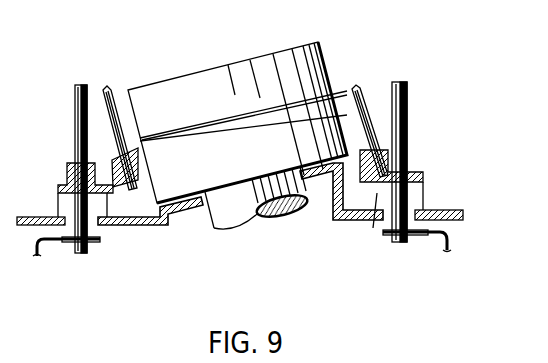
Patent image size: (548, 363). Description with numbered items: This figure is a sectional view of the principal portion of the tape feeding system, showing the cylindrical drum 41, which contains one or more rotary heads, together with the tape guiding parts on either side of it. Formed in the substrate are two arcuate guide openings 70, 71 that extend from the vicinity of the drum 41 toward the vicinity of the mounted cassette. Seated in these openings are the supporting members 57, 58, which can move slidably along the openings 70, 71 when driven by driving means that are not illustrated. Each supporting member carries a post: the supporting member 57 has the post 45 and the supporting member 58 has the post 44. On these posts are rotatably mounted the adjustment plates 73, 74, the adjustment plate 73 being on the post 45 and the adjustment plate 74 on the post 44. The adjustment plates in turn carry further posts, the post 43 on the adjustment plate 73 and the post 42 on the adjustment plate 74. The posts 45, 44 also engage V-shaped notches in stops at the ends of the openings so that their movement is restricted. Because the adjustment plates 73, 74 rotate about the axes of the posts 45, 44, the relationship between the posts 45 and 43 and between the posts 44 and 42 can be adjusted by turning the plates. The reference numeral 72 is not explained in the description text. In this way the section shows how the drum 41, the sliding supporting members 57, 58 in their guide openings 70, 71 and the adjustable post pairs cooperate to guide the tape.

The cylindrical drum 41 is at (255, 65).
The post 42 is at (105, 88).
The post 43 is at (355, 84).
The post 44 is at (77, 92).
The post 45 is at (402, 83).
The supporting member 57 is at (363, 213).
The supporting member 58 is at (97, 207).
The arcuate guide opening 70 is at (420, 237).
The arcuate guide opening 71 is at (65, 233).
The base plate 72 is at (463, 213).
The adjustment plate 73 is at (412, 157).
The adjustment plate 74 is at (60, 187).